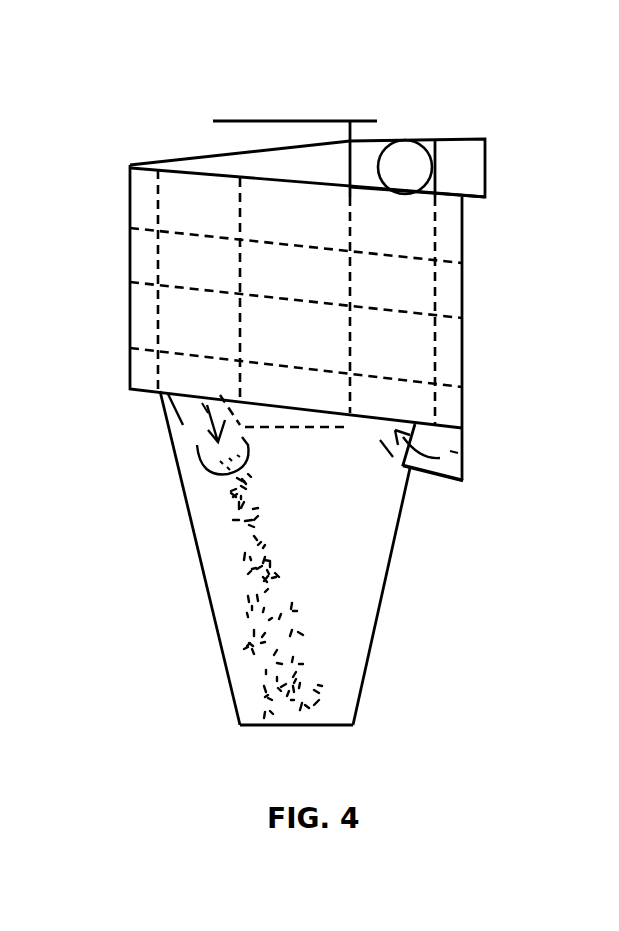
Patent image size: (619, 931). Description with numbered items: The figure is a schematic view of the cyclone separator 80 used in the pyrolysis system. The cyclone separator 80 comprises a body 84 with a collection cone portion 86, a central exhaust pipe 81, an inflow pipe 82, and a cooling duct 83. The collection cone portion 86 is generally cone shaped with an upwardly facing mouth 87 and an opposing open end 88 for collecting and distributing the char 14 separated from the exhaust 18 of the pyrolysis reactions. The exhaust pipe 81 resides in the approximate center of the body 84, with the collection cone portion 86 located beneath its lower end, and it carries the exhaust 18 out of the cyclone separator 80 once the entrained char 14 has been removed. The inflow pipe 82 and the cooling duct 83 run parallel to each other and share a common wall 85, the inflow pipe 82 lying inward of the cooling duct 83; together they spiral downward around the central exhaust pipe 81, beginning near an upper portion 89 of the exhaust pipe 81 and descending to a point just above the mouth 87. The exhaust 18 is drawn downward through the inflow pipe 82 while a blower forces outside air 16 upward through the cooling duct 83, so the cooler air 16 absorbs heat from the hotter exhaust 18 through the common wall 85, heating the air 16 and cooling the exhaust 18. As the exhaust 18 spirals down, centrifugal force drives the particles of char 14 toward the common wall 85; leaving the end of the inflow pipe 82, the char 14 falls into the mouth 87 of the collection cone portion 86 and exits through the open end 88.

The cyclone separator 80 is at (513, 278).
The central exhaust pipe 81 is at (267, 120).
The inflow pipe 82 is at (400, 160).
The cooling duct 83 is at (470, 168).
The body 84 is at (183, 477).
The common wall 85 is at (445, 162).
The collection cone portion 86 is at (393, 548).
The mouth 87 is at (463, 482).
The open end 88 is at (333, 727).
The upper portion 89 is at (308, 148).
The char 14 is at (242, 553).
The air 16 is at (440, 442).
The exhaust 18 is at (160, 403).